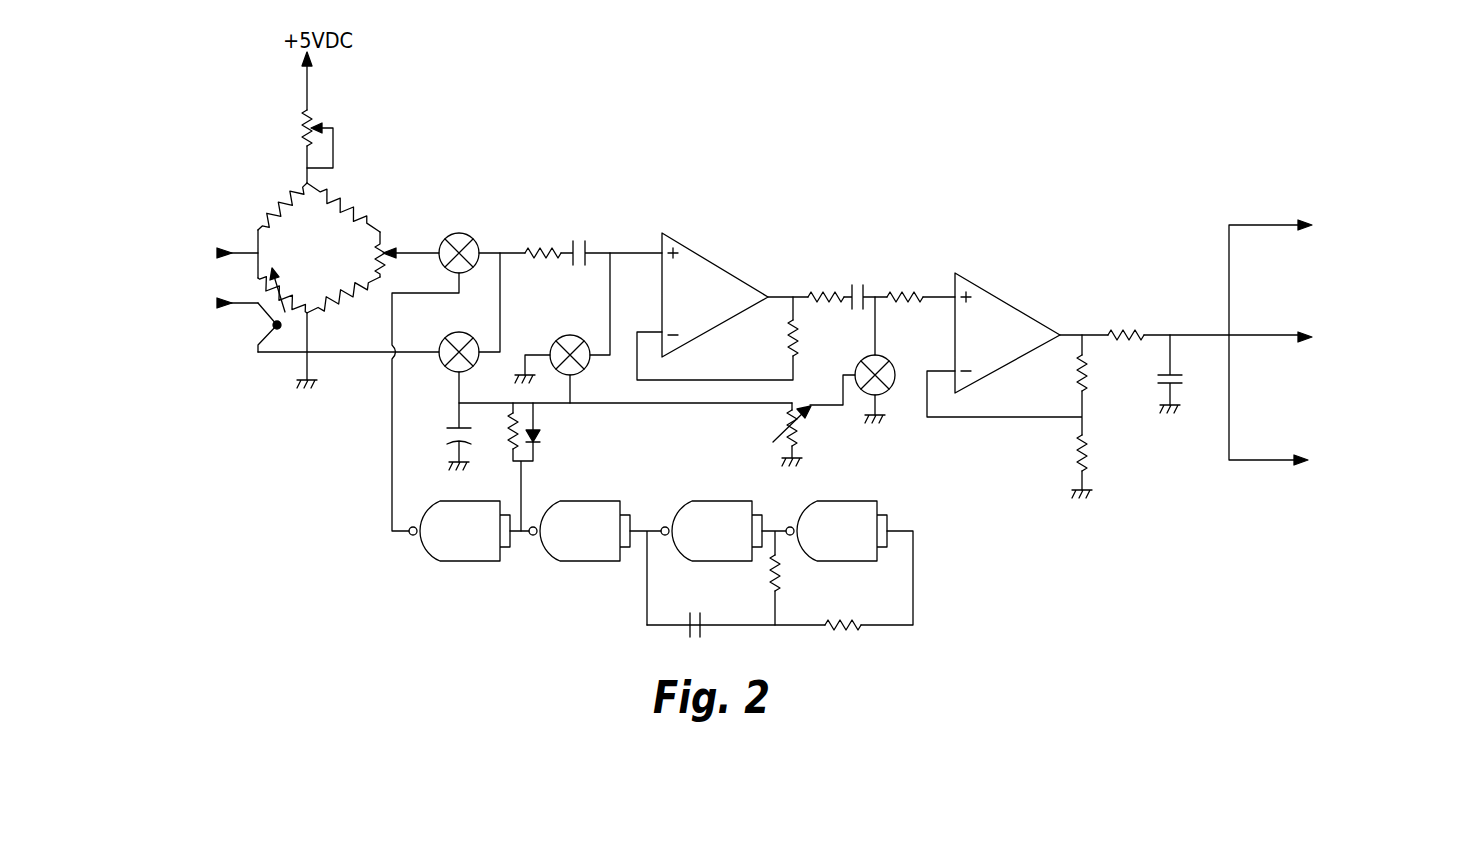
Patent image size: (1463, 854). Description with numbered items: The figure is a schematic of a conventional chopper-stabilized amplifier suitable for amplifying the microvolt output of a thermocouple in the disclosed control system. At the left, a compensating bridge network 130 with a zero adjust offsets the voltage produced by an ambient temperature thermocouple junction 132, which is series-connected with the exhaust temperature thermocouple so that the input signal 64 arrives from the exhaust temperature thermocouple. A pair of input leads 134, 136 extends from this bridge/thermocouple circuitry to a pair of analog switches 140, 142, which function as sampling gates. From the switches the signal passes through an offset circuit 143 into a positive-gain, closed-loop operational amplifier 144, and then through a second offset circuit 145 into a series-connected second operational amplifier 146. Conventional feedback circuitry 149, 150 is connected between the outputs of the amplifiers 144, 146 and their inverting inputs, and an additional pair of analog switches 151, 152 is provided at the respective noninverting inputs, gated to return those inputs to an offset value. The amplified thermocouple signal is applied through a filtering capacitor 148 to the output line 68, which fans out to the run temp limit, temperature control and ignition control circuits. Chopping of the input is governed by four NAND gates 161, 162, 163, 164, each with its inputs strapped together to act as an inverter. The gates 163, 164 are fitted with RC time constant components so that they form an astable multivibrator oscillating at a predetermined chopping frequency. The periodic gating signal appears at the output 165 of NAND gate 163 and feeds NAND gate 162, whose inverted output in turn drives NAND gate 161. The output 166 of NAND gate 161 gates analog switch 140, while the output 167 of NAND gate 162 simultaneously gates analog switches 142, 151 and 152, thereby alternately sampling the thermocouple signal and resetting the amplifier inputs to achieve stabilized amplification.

The compensating bridge network 130 is at (327, 262).
The input signal 64 is at (235, 257).
The ambient temperature thermocouple junction 132 is at (248, 333).
The input lead 136 is at (330, 350).
The input lead 134 is at (413, 248).
The analog switch 140 is at (469, 236).
The analog switch 142 is at (458, 333).
The offset circuit 143 is at (581, 240).
The operational amplifier 144 is at (708, 258).
The offset circuit 145 is at (848, 283).
The operational amplifier 146 is at (1000, 298).
The feedback circuitry 149 is at (758, 373).
The feedback circuitry 150 is at (1065, 413).
The analog switch 151 is at (563, 337).
The analog switch 152 is at (883, 356).
The temperature control output 68 is at (1180, 335).
The filtering capacitor 148 is at (1173, 370).
The NAND gate 161 is at (477, 561).
The NAND gate 162 is at (580, 561).
The NAND gate 163 is at (695, 561).
The NAND gate 164 is at (828, 561).
The output of NAND gate 163 165 is at (644, 527).
The output of NAND gate 161 166 is at (390, 457).
The output of NAND gate 162 167 is at (527, 485).